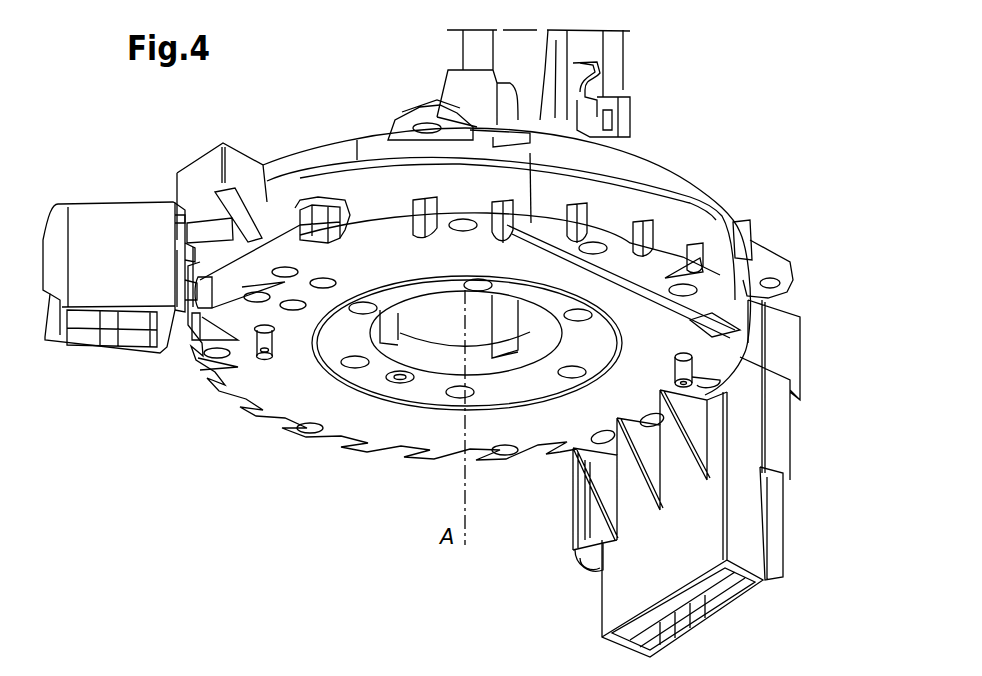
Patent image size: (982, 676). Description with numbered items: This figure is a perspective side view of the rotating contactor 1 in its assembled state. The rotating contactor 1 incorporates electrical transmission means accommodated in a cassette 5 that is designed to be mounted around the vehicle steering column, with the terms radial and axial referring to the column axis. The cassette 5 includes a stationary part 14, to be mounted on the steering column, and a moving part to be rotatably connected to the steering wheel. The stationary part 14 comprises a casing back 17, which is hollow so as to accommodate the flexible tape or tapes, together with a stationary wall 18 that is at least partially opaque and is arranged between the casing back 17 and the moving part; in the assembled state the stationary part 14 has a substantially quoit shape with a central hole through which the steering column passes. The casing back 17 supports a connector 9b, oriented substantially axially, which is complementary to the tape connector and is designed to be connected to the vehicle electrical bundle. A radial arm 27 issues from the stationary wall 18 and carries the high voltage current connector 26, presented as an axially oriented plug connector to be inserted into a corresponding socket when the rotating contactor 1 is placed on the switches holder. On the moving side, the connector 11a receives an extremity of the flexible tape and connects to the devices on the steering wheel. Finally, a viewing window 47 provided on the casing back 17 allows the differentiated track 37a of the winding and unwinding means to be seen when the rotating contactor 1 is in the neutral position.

The rotating contactor 1 is at (645, 72).
The cassette 5 is at (700, 150).
The connector 9b is at (587, 607).
The connector 11a is at (633, 125).
The stationary part 14 is at (293, 480).
The casing back 17 is at (238, 422).
The wall 18 is at (357, 140).
The high voltage current connector 26 is at (73, 352).
The radial arm 27 is at (112, 190).
The differentiated track 37a is at (327, 212).
The viewing window 47 is at (312, 228).